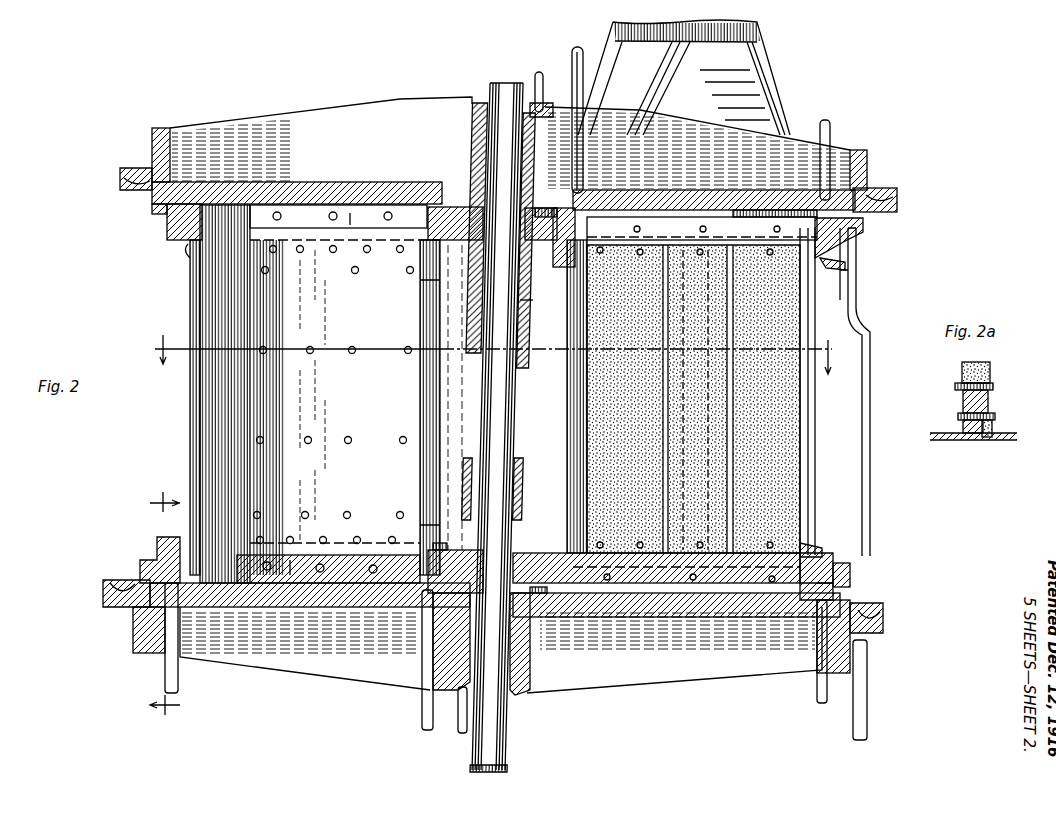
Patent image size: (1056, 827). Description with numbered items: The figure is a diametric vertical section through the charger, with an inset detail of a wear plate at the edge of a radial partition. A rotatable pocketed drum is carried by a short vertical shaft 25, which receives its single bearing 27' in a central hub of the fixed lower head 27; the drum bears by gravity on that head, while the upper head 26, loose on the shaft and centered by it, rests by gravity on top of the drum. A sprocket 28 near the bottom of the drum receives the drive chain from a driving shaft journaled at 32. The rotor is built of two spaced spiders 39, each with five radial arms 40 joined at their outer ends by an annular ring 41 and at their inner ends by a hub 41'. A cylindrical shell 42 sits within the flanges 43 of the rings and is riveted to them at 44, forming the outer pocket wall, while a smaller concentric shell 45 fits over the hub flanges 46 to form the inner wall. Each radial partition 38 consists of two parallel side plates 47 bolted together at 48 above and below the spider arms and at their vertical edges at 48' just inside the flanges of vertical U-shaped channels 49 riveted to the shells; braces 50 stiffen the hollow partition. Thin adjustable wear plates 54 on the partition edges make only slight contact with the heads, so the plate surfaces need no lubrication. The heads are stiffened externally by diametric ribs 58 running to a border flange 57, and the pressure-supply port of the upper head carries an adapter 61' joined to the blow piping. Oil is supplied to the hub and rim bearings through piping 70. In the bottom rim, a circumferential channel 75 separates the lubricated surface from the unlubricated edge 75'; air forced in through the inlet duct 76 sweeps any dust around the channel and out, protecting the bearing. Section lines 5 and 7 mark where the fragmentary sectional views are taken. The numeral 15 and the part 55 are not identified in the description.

In FIG. 2, the section line 5- 5 is at (165, 605).
In FIG. 2, the section line 7- 7 is at (491, 354).
In FIG. 2, the bracket 15 is at (822, 585).
In FIG. 2, the vertical shaft 25 is at (488, 432).
In FIG. 2, the upper head 26 is at (112, 183).
In FIG. 2, the lower head 27 is at (458, 626).
In FIG. 2a, the lower head 27 is at (973, 452).
In FIG. 2, the bearing 27' is at (503, 656).
In FIG. 2, the sprocket 28 is at (851, 578).
In FIG. 2, the journal 32 is at (720, 148).
In FIG. 2, the partition 38 is at (265, 468).
In FIG. 2a, the partition 38 is at (990, 372).
In FIG. 2, the spider 39 is at (154, 230).
In FIG. 2, the radial arm 40 is at (657, 226).
In FIG. 2a, the radial arm 40 is at (961, 406).
In FIG. 2, the annular ring 41 is at (741, 414).
In FIG. 2, the hub 41' is at (457, 506).
In FIG. 2, the cylindrical shell 42 is at (189, 403).
In FIG. 2, the flange 43 is at (818, 275).
In FIG. 2, the rivet 44 is at (182, 307).
In FIG. 2, the inner concentric shell 45 is at (420, 420).
In FIG. 2, the hub flange 46 is at (418, 287).
In FIG. 2, the side plate 47 is at (338, 394).
In FIG. 2a, the side plate 47 is at (960, 376).
In FIG. 2, the bolt 48 is at (543, 314).
In FIG. 2a, the edge bolt 48' is at (988, 394).
In FIG. 2, the U-shaped channel 49 is at (597, 390).
In FIG. 2, the brace 50 is at (718, 436).
In FIG. 2, the wear plate 54 is at (350, 213).
In FIG. 2a, the wear plate 54 is at (994, 432).
In FIG. 2, the pin 55 is at (553, 105).
In FIG. 2, the border flange 57 is at (171, 130).
In FIG. 2, the rib 58 is at (277, 128).
In FIG. 2, the pressure-supply adapter 61' is at (695, 77).
In FIG. 2, the oil piping 70 is at (534, 80).
In FIG. 2, the channel 75 is at (139, 560).
In FIG. 2, the unlubricated edge 75' is at (789, 613).
In FIG. 2, the air inlet duct 76 is at (166, 680).